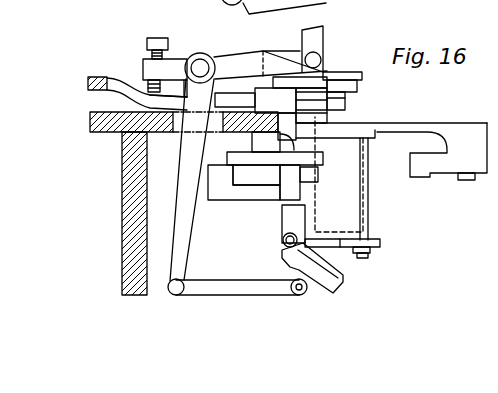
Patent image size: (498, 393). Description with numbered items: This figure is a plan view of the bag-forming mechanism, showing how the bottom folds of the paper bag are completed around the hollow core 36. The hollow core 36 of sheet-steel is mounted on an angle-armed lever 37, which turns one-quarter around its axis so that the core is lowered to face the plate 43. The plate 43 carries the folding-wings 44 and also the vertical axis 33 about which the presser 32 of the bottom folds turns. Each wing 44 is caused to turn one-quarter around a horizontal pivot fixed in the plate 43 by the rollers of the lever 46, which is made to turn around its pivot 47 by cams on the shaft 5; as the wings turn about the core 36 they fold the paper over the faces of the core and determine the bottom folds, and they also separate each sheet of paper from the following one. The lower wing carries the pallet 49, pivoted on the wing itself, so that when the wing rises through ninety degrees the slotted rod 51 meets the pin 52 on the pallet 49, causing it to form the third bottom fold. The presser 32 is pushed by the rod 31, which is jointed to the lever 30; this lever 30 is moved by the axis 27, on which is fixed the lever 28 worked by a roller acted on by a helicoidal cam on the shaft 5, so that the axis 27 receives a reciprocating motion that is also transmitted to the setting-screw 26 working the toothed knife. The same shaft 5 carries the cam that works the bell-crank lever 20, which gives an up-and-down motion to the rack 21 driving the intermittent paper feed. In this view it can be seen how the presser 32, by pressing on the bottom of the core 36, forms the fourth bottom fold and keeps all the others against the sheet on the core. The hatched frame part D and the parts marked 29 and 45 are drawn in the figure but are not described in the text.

The frame / support D is at (147, 177).
The shaft 5 is at (323, 43).
The bell-crank lever 20 is at (132, 82).
The rack 21 is at (91, 80).
The setting-screw 26 is at (148, 93).
The axis 27 is at (201, 62).
The lever 28 is at (245, 62).
The block 29 is at (328, 73).
The lever 30 is at (191, 187).
The rod 31 is at (223, 288).
The presser 32 is at (337, 288).
The vertical axis 33 is at (283, 238).
The hollow core 36 is at (352, 129).
The angle-armed lever 37 is at (453, 131).
The plate 43 is at (290, 182).
The folding-wings 44 is at (370, 197).
The slide 45 is at (313, 178).
The lever 46 is at (250, 158).
The axis of lever 47 is at (217, 147).
The pallet 49 is at (380, 239).
The slotted rod 51 is at (370, 250).
The pin 52 is at (362, 258).